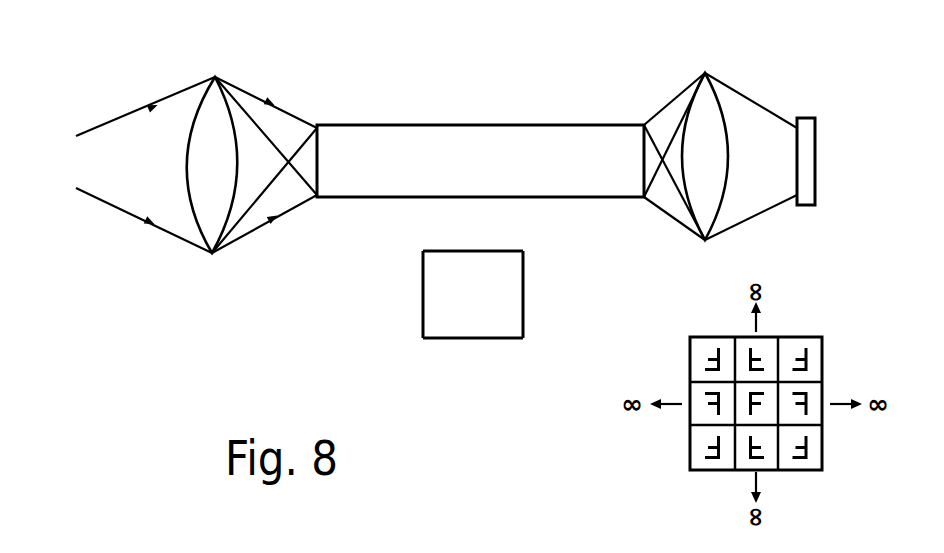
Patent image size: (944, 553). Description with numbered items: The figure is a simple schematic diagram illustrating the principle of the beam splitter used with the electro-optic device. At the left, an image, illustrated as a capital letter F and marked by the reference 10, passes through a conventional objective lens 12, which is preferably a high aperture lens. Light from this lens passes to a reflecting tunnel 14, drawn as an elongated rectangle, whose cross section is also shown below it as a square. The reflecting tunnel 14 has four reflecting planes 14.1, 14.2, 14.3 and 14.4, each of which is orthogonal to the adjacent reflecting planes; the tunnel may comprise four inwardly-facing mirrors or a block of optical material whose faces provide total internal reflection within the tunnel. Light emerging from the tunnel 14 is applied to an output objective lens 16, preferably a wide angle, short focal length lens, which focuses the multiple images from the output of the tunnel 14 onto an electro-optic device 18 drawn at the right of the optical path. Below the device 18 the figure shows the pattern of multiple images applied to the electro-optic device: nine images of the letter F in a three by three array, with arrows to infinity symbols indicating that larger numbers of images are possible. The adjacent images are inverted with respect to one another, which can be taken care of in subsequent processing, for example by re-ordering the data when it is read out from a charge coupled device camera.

The object (letter F) / light rays from object 10 is at (86, 194).
The objective lens 12 is at (208, 256).
The reflecting tunnel 14 is at (500, 123).
The reflecting plane 14.1 is at (524, 292).
The reflecting plane 14.2 is at (475, 250).
The reflecting plane 14.3 is at (423, 293).
The reflecting plane 14.4 is at (482, 339).
The output objective lens 16 is at (710, 68).
The electro-optic device 18 is at (800, 205).